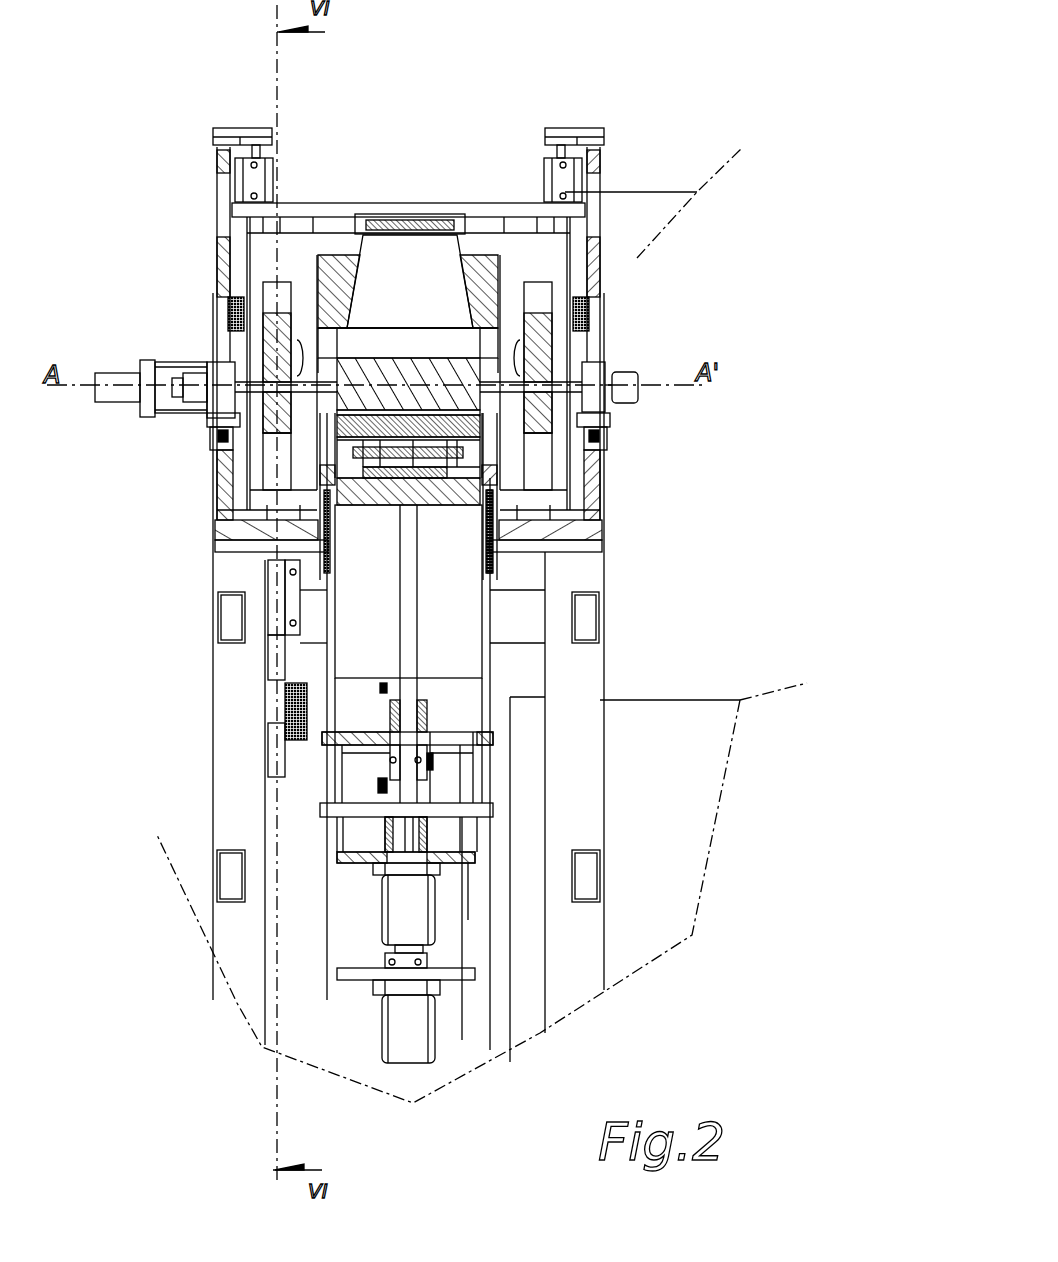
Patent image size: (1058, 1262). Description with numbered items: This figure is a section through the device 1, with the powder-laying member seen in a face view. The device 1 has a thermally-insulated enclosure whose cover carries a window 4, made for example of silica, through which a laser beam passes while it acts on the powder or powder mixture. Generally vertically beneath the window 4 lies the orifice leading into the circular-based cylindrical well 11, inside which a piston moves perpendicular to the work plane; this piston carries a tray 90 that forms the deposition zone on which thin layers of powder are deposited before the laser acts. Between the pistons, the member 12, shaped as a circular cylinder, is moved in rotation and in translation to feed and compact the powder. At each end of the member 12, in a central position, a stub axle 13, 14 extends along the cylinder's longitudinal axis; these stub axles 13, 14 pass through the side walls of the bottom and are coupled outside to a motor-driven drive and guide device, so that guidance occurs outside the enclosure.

The device 1 is at (510, 698).
The window 4 is at (435, 288).
The well 11 is at (377, 598).
The member 12 is at (392, 360).
The stub axle 13 is at (583, 327).
The stub axle 14 is at (265, 315).
The tray 90 is at (458, 418).